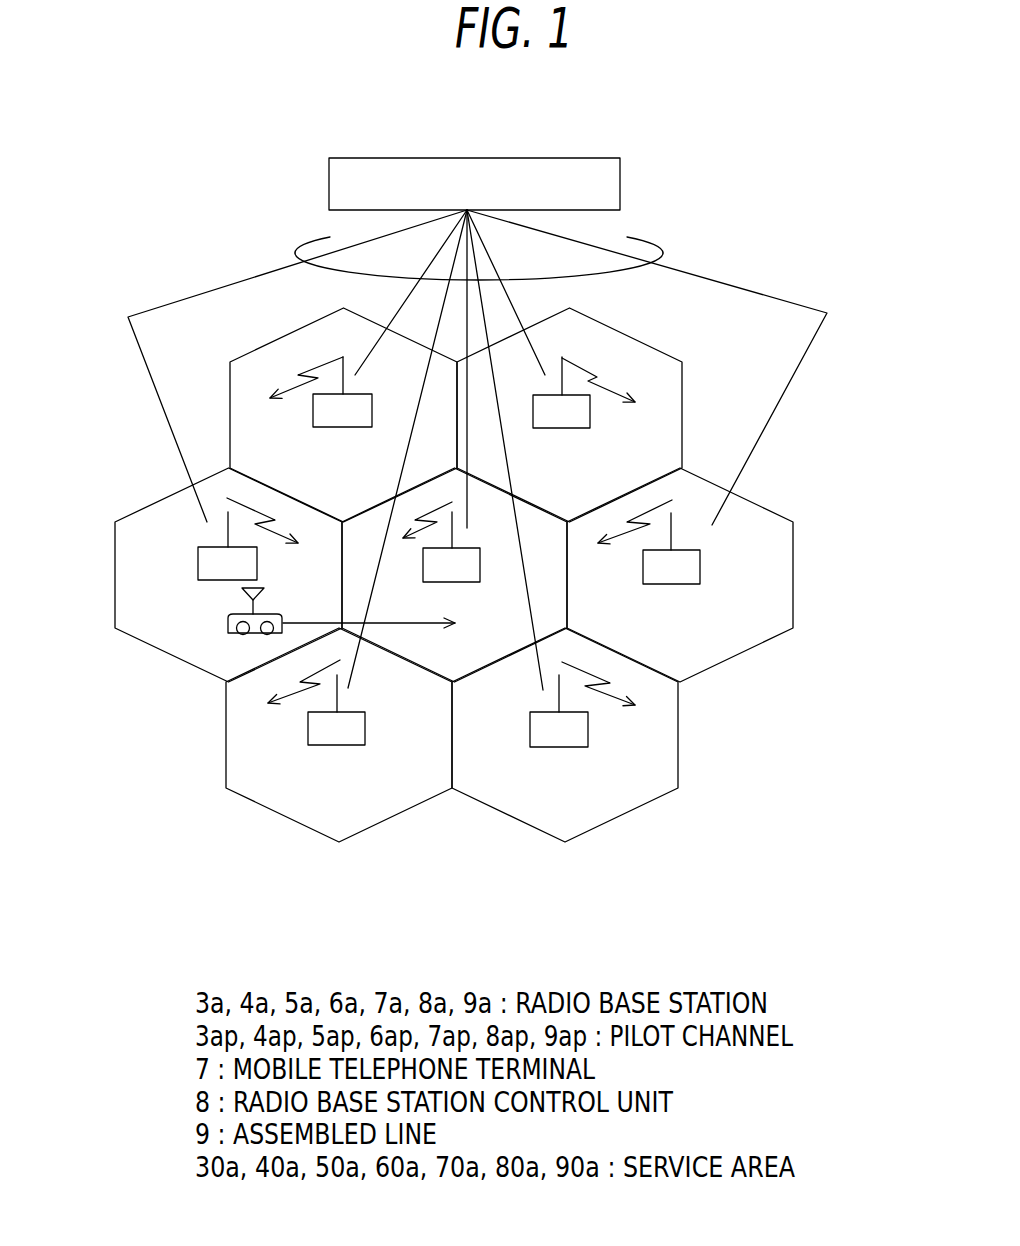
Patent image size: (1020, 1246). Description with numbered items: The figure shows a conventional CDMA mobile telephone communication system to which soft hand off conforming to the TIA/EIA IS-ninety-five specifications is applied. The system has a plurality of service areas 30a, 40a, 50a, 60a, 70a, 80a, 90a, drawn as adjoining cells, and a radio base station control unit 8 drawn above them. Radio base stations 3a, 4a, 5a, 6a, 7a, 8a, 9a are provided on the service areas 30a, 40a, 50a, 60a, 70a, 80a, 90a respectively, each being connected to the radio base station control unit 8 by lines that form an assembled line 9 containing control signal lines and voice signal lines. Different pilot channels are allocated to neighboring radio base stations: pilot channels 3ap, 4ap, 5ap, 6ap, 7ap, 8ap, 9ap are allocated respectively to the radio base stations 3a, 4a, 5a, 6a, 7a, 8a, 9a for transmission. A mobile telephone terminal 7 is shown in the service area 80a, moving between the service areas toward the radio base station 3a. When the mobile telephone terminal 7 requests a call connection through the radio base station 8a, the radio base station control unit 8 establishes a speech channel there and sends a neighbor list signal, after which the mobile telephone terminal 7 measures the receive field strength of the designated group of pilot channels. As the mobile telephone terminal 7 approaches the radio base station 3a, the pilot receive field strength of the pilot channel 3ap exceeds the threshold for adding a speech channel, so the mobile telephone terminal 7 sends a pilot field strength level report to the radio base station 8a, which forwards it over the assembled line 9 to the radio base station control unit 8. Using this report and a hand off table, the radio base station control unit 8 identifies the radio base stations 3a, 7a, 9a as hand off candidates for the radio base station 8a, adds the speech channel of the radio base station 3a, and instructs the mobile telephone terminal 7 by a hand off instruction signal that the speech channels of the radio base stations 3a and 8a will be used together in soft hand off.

The radio base station 3a is at (451, 547).
The radio base station 4a is at (561, 392).
The radio base station 5a is at (671, 548).
The radio base station 6a is at (559, 711).
The radio base station 7a is at (336, 710).
The radio base station 8a is at (227, 546).
The radio base station 9a is at (342, 392).
The pilot channel 3ap is at (393, 503).
The pilot channel 4ap is at (578, 358).
The pilot channel 5ap is at (635, 521).
The pilot channel 6ap is at (622, 687).
The pilot channel 7ap is at (282, 680).
The pilot channel 8ap is at (207, 507).
The pilot channel 9ap is at (330, 357).
The mobile telephone terminal 7 is at (228, 623).
The radio base station control unit 8 is at (620, 184).
The assembled line 9 is at (663, 255).
The service area 30a is at (454, 575).
The service area 40a is at (685, 370).
The service area 50a is at (793, 578).
The service area 60a is at (638, 812).
The service area 70a is at (288, 813).
The service area 80a is at (163, 638).
The service area 90a is at (228, 384).